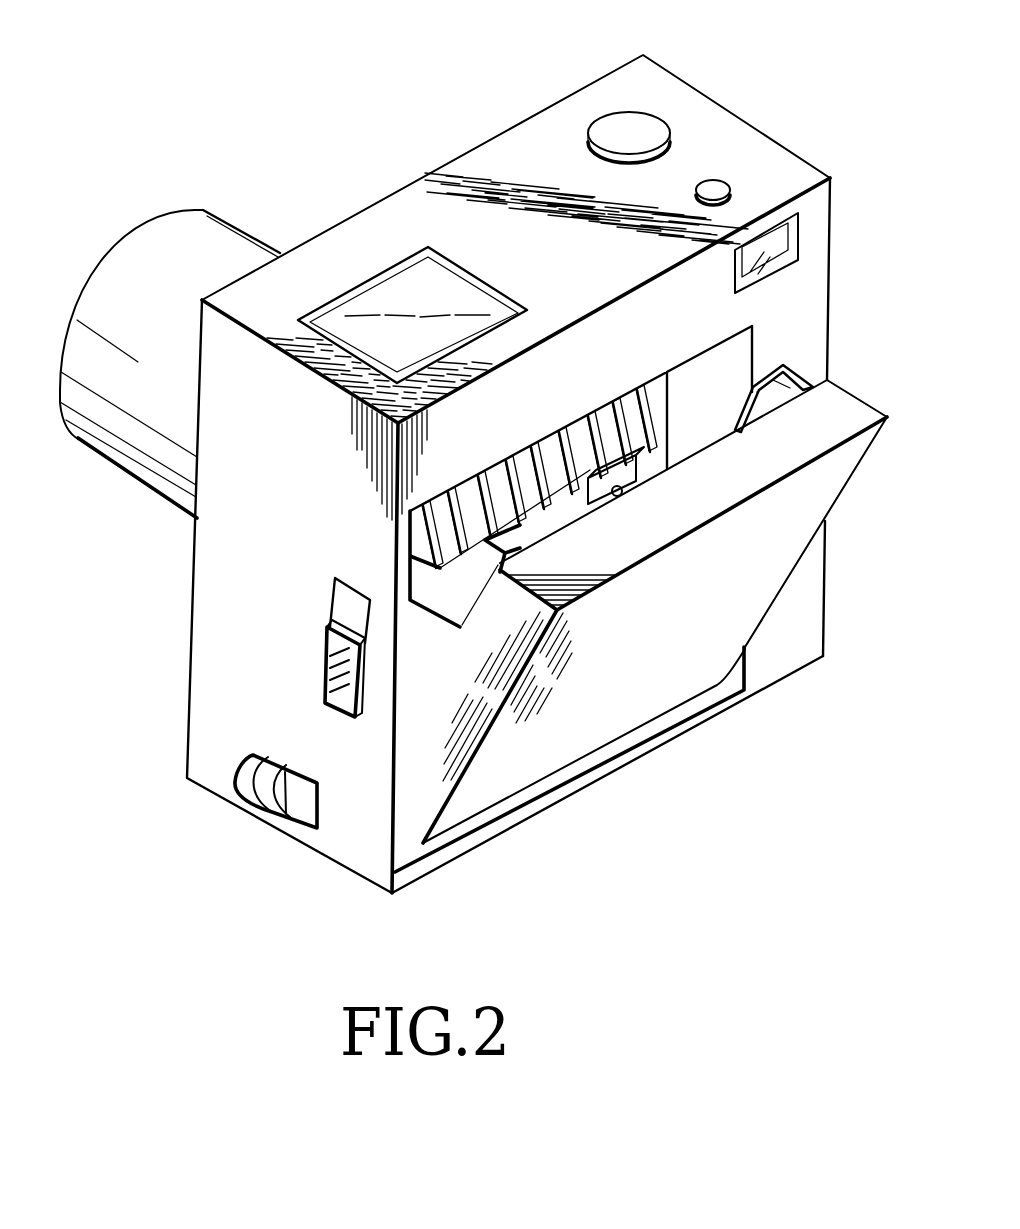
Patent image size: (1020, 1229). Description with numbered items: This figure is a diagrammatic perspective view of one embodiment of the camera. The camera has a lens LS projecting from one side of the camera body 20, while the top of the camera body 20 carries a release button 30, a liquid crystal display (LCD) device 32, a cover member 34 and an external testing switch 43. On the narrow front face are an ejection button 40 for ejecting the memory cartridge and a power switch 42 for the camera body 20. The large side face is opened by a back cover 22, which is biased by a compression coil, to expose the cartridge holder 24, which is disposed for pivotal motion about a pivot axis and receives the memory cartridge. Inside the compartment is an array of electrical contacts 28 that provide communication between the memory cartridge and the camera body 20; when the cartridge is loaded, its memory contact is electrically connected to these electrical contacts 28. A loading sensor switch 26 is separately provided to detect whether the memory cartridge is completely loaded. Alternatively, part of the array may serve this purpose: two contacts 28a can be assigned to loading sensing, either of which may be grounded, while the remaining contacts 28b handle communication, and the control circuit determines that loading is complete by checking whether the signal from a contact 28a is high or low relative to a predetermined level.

The camera body 20 is at (446, 140).
The lens LS is at (132, 240).
The back cover 22 is at (842, 407).
The cartridge holder 24 is at (800, 368).
The loading sensor switch 26 is at (640, 472).
The array of electrical contacts 28 is at (537, 464).
The contacts for loading sensing 28a is at (645, 363).
The remaining contacts for communication 28b is at (433, 478).
The release button 30 is at (608, 127).
The liquid crystal display (LCD) device 32 is at (367, 298).
The cover member 34 is at (716, 148).
The ejection button 40 is at (327, 664).
The power switch 42 is at (263, 797).
The external testing switch 43 is at (724, 185).